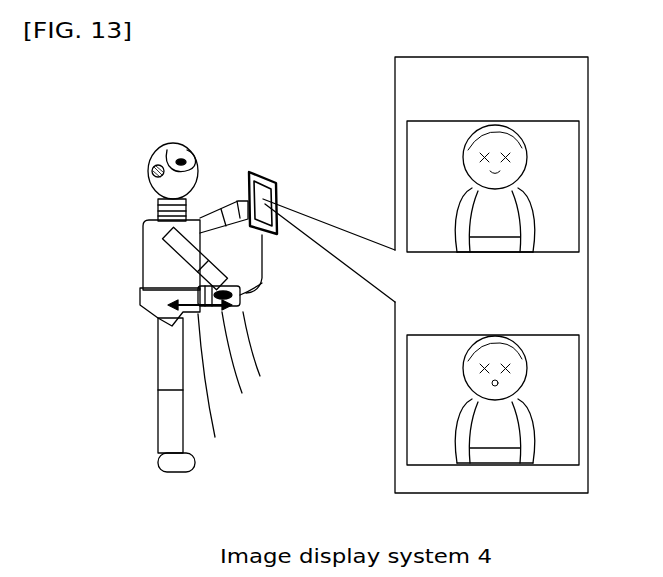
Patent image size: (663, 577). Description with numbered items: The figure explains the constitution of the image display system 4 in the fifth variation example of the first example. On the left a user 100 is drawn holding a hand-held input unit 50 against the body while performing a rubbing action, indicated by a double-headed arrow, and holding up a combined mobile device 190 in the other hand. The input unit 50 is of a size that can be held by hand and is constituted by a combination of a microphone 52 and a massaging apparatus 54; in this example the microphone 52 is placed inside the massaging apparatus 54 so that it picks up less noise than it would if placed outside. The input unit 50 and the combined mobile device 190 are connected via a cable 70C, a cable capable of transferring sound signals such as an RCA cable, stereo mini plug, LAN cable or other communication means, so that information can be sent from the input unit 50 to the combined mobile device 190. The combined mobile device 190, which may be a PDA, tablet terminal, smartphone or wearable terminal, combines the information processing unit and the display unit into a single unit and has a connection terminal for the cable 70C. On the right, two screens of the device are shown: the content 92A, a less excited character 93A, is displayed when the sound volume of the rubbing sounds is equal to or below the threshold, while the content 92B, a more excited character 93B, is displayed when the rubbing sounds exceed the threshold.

The image display system 4 is at (348, 271).
The robot 100 is at (167, 150).
The combined mobile device 190 is at (268, 170).
The cable 70C is at (263, 283).
The input unit 50 is at (272, 372).
The microphone 52 is at (238, 364).
The massaging apparatus 54 is at (256, 354).
The content 92A is at (425, 143).
The less excited character 93A is at (490, 126).
The content 92B is at (425, 367).
The more excited character 93B is at (495, 340).